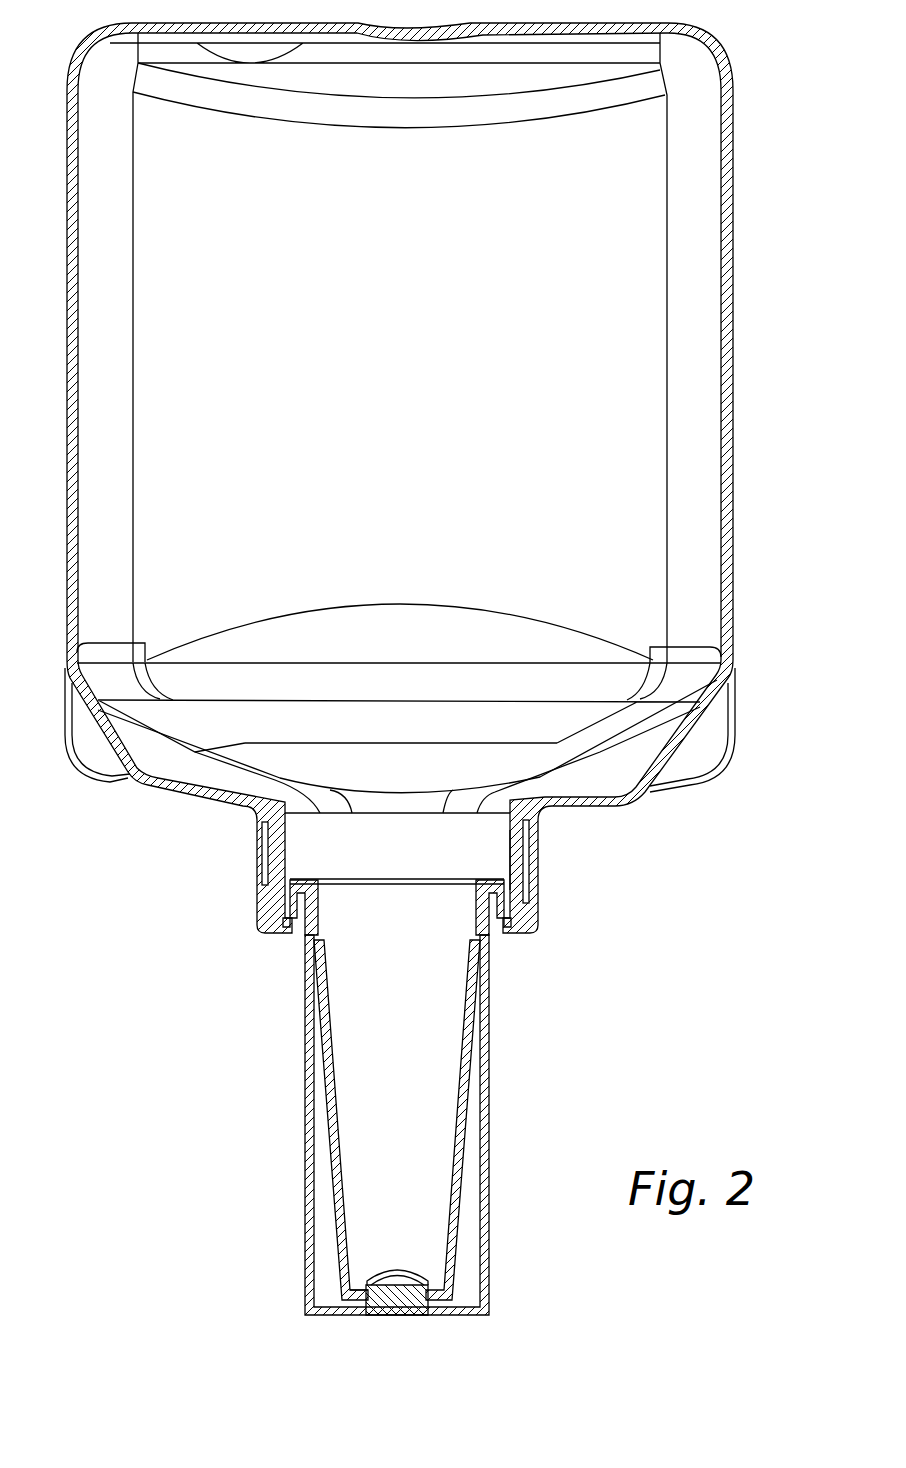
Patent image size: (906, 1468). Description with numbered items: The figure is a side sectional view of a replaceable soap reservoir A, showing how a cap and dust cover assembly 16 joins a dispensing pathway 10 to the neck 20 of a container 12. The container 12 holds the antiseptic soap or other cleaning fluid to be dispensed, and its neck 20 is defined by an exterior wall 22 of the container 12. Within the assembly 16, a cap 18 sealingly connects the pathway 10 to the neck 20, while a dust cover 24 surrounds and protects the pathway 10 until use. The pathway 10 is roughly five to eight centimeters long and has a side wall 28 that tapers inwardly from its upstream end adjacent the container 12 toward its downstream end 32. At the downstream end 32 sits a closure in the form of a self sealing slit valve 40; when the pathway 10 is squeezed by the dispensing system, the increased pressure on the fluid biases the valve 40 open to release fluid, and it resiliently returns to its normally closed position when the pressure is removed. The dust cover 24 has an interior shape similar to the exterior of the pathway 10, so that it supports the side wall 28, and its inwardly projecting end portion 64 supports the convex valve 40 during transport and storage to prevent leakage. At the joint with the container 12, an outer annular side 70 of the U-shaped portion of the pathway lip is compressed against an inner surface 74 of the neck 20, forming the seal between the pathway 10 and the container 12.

The pathway 10 is at (437, 1117).
The container 12 is at (622, 240).
The cap and dust cover assembly 16 is at (400, 536).
The cap 18 is at (536, 860).
The neck 20 is at (258, 845).
The exterior wall 22 is at (627, 797).
The dust cover 24 is at (487, 1242).
The side wall 28 is at (463, 1180).
The downstream end 32 is at (455, 1284).
The self sealing slit valve 40 is at (368, 1262).
The inwardly projecting end portion 64 is at (397, 1298).
The outer annular side 70 is at (525, 898).
The inner surface 74 is at (508, 858).
The replaceable soap reservoir A is at (757, 509).